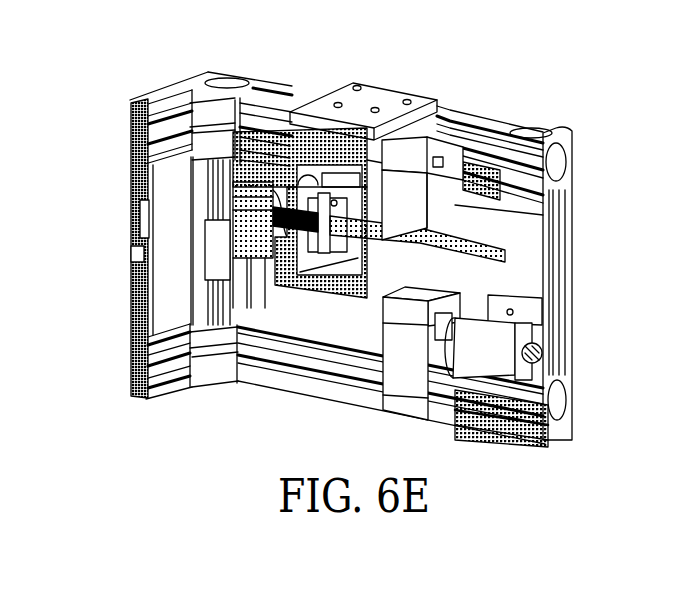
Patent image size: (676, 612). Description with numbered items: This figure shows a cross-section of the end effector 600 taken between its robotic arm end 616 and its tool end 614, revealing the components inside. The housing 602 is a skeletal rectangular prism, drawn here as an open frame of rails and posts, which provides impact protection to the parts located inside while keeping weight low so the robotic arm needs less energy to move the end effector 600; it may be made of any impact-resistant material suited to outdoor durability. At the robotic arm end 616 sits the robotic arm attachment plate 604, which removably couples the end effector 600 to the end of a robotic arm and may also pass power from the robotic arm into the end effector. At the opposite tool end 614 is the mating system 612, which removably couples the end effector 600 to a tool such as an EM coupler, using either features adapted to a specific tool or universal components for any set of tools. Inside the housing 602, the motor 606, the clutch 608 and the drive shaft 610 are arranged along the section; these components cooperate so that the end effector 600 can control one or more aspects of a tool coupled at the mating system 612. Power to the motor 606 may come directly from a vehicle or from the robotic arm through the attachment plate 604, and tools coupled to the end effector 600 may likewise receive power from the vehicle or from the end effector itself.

The end effector 600 is at (113, 105).
The housing 602 is at (320, 78).
The robotic arm attachment plate 604 is at (207, 72).
The motor 606 is at (205, 253).
The clutch 608 is at (333, 300).
The drive shaft 610 is at (482, 256).
The mating system 612 is at (423, 208).
The tool end 614 is at (580, 192).
The robotic arm end 616 is at (130, 342).